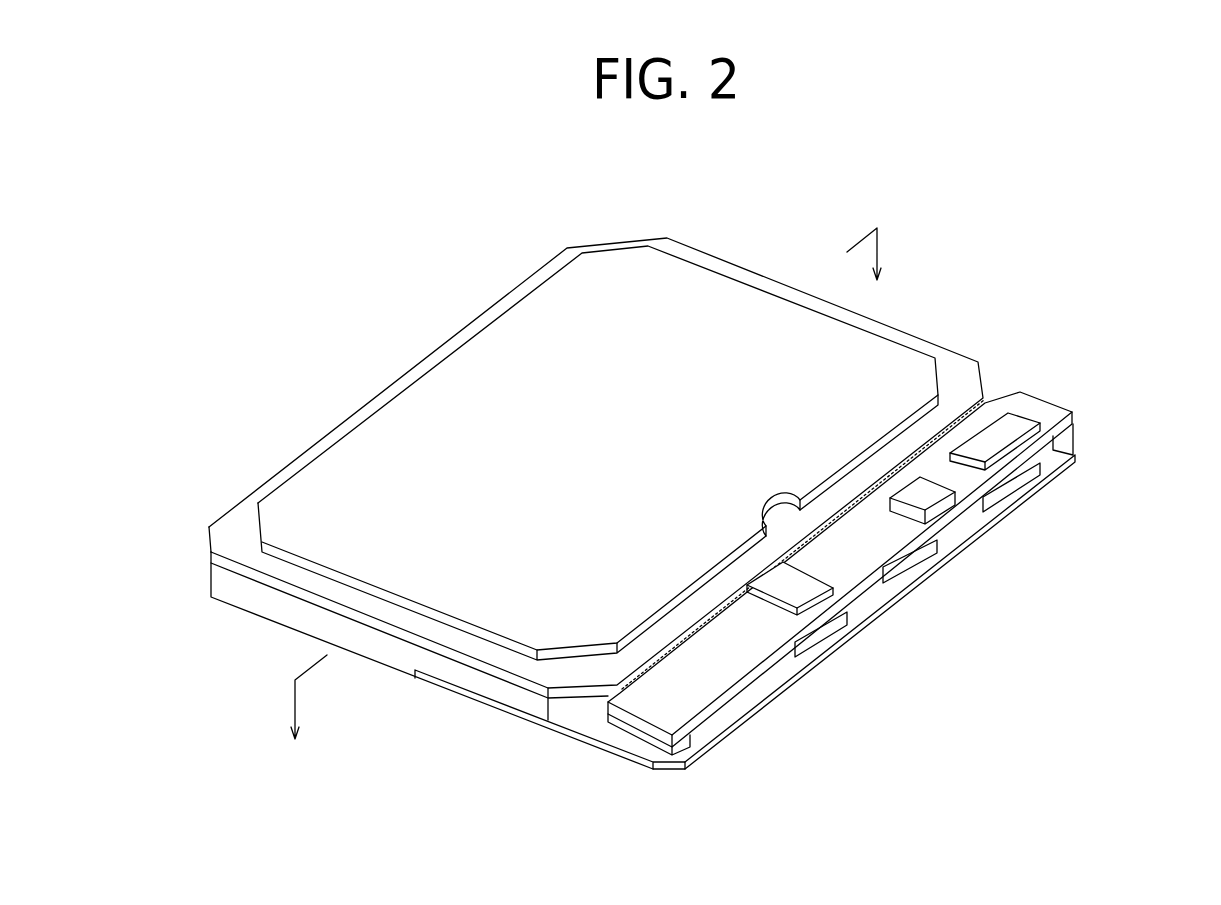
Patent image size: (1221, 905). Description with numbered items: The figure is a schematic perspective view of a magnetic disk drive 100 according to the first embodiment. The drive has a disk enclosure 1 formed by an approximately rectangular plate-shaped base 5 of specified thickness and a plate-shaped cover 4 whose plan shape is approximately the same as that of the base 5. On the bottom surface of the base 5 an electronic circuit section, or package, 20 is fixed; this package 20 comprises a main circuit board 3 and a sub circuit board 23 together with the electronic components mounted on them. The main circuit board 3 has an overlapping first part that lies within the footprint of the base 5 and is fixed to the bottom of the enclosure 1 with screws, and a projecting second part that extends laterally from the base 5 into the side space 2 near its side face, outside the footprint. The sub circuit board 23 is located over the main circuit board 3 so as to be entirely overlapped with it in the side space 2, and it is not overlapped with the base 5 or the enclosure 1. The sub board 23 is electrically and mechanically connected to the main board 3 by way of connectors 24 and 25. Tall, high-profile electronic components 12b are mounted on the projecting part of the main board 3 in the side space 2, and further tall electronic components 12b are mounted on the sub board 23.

The magnetic disk drive 100 is at (724, 220).
The disk enclosure 1 is at (112, 393).
The cover 4 is at (297, 493).
The base 5 is at (228, 578).
The side space 2 is at (662, 763).
The main circuit board 3 is at (768, 673).
The electronic circuit section 20 is at (1086, 424).
The sub circuit board 23 is at (1037, 410).
The connector 24 is at (692, 748).
The connector 25 is at (1073, 445).
The tall electronic components 12b is at (947, 507).